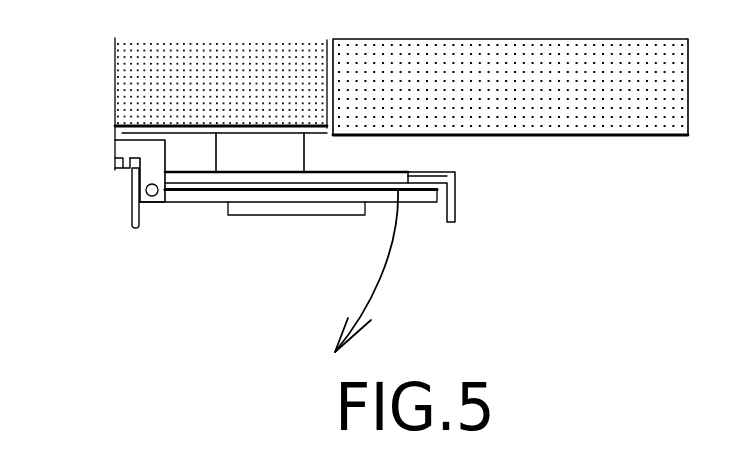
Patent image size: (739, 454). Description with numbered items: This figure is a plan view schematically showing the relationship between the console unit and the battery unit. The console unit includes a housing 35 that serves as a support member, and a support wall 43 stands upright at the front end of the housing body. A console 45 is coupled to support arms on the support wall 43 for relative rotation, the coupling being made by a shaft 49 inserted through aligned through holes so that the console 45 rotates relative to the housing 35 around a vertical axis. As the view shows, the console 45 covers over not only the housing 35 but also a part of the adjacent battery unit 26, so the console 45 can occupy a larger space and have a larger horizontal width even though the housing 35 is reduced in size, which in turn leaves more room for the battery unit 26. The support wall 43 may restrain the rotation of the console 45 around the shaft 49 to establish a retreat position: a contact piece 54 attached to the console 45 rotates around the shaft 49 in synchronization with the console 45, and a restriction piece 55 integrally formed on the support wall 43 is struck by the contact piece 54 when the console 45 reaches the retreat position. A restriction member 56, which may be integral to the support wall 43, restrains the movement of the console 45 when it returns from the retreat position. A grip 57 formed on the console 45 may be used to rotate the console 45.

The housing 35 is at (114, 68).
The battery unit 26 is at (598, 136).
The support wall 43 is at (293, 133).
The restriction piece 55 is at (121, 172).
The contact piece 54 is at (133, 221).
The shaft 49 is at (153, 197).
The console 45 is at (286, 198).
The restriction member 56 is at (247, 163).
The grip 57 is at (456, 209).